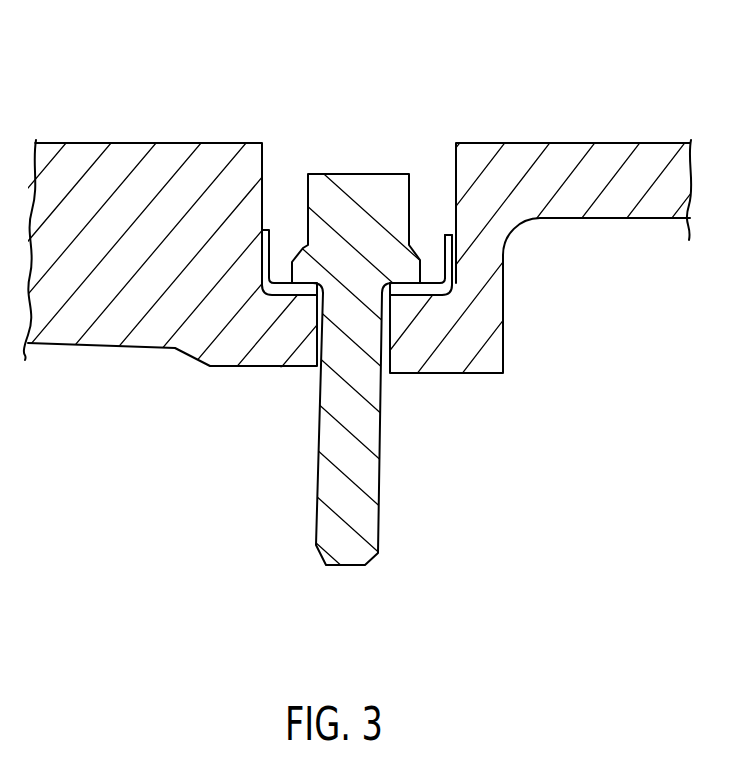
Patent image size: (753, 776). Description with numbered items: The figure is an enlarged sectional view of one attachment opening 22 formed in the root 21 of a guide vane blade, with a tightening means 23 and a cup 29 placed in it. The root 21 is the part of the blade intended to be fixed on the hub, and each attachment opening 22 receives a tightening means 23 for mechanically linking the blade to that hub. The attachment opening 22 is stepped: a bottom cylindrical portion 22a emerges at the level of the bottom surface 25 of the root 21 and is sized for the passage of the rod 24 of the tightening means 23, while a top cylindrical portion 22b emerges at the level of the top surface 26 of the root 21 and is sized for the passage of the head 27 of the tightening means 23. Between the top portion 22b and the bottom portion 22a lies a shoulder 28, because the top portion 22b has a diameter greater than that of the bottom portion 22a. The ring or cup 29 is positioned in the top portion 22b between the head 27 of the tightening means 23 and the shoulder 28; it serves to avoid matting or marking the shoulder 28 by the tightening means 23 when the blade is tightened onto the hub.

The root 21 is at (602, 175).
The attachment opening 22 is at (415, 261).
The bottom cylindrical portion 22a is at (306, 392).
The top cylindrical portion 22b is at (283, 158).
The tightening means 23 is at (355, 245).
The rod 24 is at (379, 497).
The bottom surface 25 is at (486, 400).
The top surface 26 is at (128, 128).
The head 27 is at (332, 205).
The shoulder 28 is at (420, 322).
The cup 29 is at (448, 258).